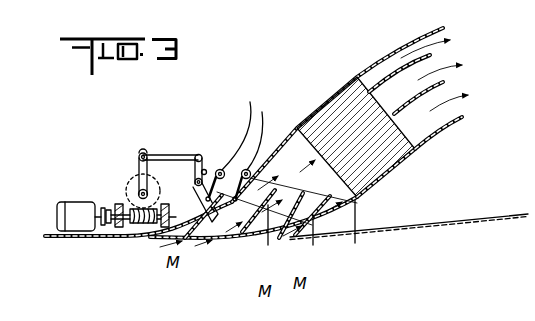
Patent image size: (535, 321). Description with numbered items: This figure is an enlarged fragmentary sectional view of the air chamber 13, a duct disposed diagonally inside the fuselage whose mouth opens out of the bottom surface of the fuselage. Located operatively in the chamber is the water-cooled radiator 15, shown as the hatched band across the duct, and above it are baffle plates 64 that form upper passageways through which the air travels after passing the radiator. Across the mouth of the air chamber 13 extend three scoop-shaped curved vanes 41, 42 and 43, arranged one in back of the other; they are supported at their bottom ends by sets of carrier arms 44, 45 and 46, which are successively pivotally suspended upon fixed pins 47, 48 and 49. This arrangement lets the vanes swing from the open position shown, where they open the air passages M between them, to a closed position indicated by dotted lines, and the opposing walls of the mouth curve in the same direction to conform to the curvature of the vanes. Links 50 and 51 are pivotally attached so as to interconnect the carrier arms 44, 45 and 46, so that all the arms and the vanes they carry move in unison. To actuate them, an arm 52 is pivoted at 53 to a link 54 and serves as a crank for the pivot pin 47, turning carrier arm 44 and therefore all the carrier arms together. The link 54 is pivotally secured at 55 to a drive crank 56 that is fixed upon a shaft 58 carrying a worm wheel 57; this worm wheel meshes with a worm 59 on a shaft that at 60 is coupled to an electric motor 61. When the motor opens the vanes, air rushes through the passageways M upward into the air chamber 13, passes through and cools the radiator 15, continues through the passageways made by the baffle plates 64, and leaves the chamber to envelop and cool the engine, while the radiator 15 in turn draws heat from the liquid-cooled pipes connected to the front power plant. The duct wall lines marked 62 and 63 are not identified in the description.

The air duct or chamber 13 is at (338, 200).
The water-cooled radiator 15 is at (378, 166).
The curved vane 41 is at (238, 238).
The curved vane 42 is at (270, 216).
The curved vane 43 is at (313, 220).
The carrier arm 44 is at (203, 192).
The carrier arm 45 is at (230, 238).
The carrier arm 46 is at (262, 223).
The fixed pin 47 is at (222, 169).
The fixed pin 48 is at (250, 104).
The fixed pin 49 is at (247, 169).
The link 50 is at (262, 116).
The link 51 is at (260, 165).
The arm 52 is at (205, 170).
The pivot 53 is at (200, 155).
The link 54 is at (167, 156).
The pivot 55 is at (141, 155).
The drive crank 56 is at (138, 166).
The worm wheel 57 is at (126, 191).
The shaft 58 is at (138, 193).
The worm 59 is at (141, 225).
The coupling 60 is at (107, 226).
The electric motor 61 is at (72, 213).
The floor wall 62 is at (120, 238).
The lower duct wall 63 is at (433, 231).
The baffle plate 64 is at (427, 93).